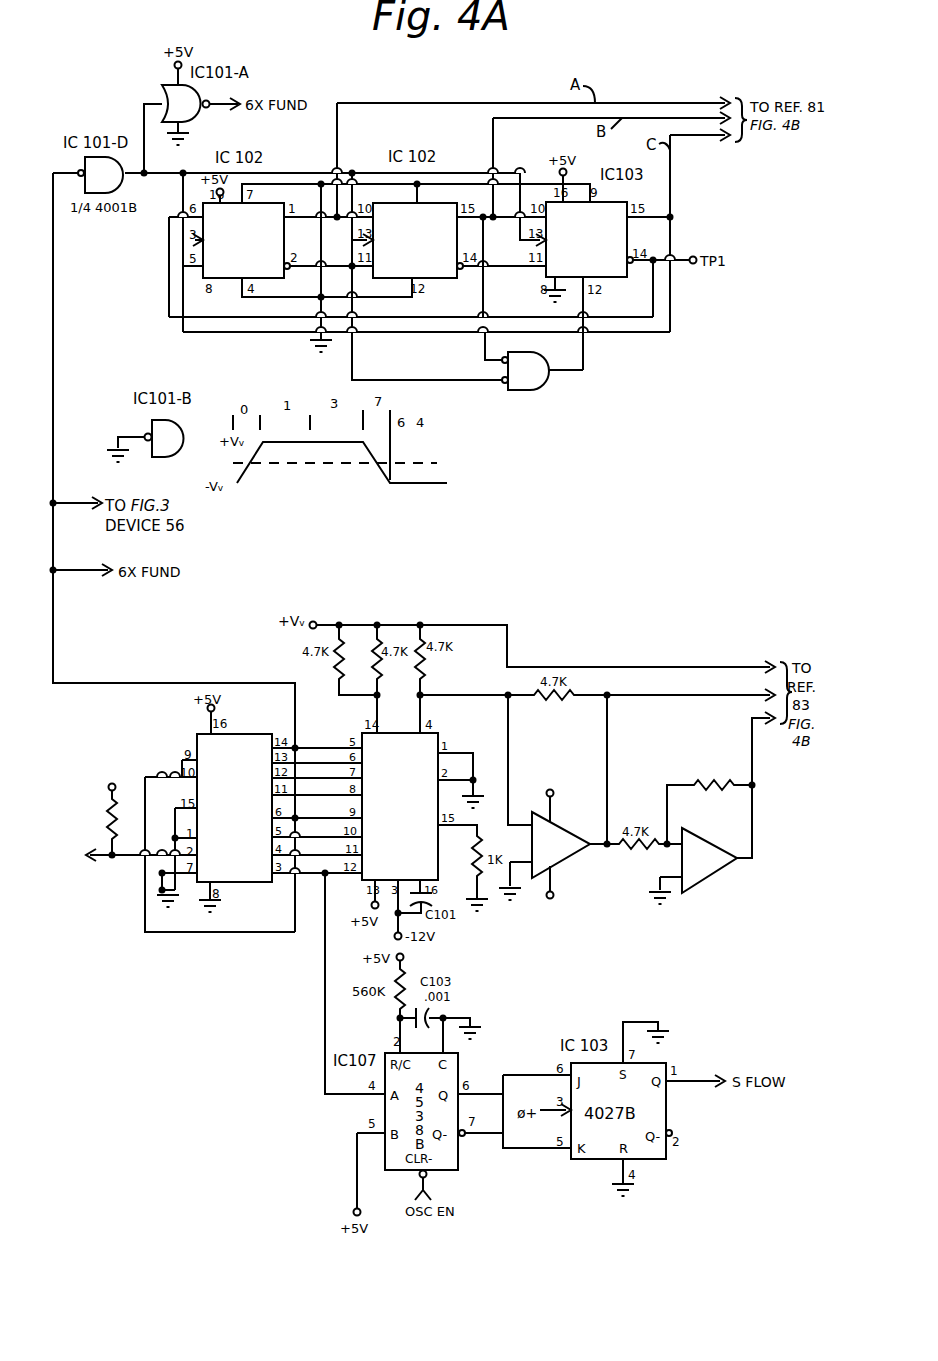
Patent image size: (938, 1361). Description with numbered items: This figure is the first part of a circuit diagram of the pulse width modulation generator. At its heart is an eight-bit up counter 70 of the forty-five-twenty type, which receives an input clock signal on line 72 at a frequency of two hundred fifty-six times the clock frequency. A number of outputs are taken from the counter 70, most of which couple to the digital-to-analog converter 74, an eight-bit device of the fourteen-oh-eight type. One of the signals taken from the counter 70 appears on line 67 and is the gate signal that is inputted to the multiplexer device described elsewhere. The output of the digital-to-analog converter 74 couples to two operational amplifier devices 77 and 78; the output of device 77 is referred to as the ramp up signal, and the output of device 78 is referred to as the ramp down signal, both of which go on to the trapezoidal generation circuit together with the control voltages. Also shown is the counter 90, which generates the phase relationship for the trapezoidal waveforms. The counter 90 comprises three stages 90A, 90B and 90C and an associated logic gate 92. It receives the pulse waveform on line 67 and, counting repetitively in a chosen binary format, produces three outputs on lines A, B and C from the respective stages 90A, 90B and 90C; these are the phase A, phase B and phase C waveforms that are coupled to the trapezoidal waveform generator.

The line 67 is at (53, 414).
The counter 90 is at (377, 160).
The first stage of counter 90A is at (225, 282).
The second stage of counter 90B is at (437, 282).
The third stage of counter 90C is at (607, 280).
The logic gate 92 is at (545, 385).
The 8-bit up counter 70 is at (265, 727).
The input clock signal line 72 is at (104, 862).
The digital-to-analog converter 74 is at (438, 735).
The operational amplifier device 77 is at (566, 858).
The operational amplifier device 78 is at (690, 878).